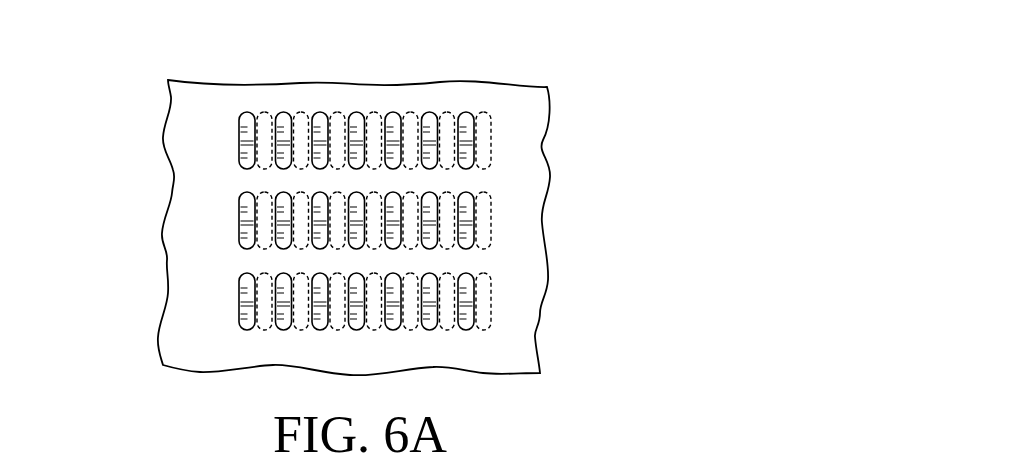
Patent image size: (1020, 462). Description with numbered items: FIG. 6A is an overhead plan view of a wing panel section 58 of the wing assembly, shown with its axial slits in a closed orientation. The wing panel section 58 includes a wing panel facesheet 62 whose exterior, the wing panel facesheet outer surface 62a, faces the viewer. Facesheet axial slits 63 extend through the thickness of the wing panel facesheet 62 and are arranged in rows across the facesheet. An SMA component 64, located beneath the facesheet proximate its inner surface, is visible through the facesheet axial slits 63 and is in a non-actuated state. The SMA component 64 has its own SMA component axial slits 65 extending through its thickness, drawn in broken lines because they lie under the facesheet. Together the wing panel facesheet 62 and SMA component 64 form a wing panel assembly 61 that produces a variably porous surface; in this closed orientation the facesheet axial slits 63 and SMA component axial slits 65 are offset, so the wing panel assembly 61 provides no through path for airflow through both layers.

The wing panel section 58 is at (584, 233).
The wing panel assembly 61 is at (160, 172).
The wing panel facesheet 62 is at (530, 87).
The wing panel facesheet outer surface 62a is at (523, 298).
The facesheet axial slits 63 is at (466, 114).
The SMA component 64 is at (470, 143).
The SMA component axial slits 65 is at (444, 114).